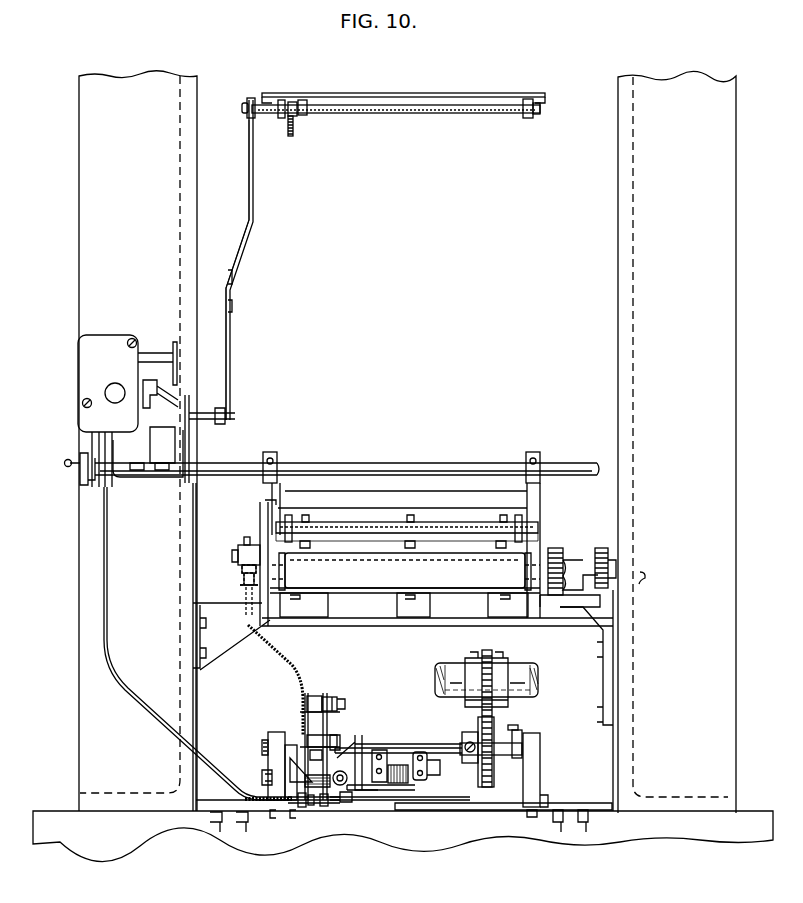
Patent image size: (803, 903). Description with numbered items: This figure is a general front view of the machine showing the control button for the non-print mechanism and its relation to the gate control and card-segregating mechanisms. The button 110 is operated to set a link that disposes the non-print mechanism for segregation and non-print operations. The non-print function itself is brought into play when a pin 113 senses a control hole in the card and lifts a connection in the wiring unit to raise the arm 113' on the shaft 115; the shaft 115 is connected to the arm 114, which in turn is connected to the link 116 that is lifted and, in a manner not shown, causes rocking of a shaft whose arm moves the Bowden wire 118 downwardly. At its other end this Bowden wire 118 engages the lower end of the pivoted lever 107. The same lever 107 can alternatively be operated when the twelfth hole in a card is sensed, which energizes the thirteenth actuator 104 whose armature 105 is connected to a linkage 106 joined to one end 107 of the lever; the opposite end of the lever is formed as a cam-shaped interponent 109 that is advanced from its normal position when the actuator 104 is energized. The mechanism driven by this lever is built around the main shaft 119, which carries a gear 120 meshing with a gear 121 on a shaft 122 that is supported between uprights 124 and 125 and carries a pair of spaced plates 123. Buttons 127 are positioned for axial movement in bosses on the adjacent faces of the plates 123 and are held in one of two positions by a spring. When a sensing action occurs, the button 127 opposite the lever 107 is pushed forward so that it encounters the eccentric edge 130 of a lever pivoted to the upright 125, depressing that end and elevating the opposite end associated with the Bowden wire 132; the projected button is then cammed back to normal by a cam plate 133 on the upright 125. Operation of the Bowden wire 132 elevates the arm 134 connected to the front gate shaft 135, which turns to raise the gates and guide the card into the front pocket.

The thirteenth actuator 104 is at (400, 784).
The armature 105 is at (390, 792).
The linkage 106 is at (355, 792).
The pivoted lever 107 is at (345, 803).
The cam shaped interponent 109 is at (356, 744).
The button 110 is at (105, 393).
The pin 113 is at (307, 135).
The arm 113' is at (290, 84).
The arm 114 is at (251, 98).
The shaft 115 is at (416, 108).
The link 116 is at (254, 197).
The Bowden wire 118 is at (107, 566).
The main shaft 119 is at (538, 678).
The gear 120 is at (487, 650).
The gear 121 is at (492, 742).
The shaft 122 is at (406, 747).
The spaced plates 123 is at (326, 704).
The upright 124 is at (535, 776).
The upright 125 is at (278, 735).
The buttons 127 is at (344, 704).
The edge 130 is at (300, 808).
The Bowden wire 132 is at (270, 652).
The cam plate 133 is at (290, 785).
The arm 134 is at (244, 548).
The front gate shaft 135 is at (242, 574).